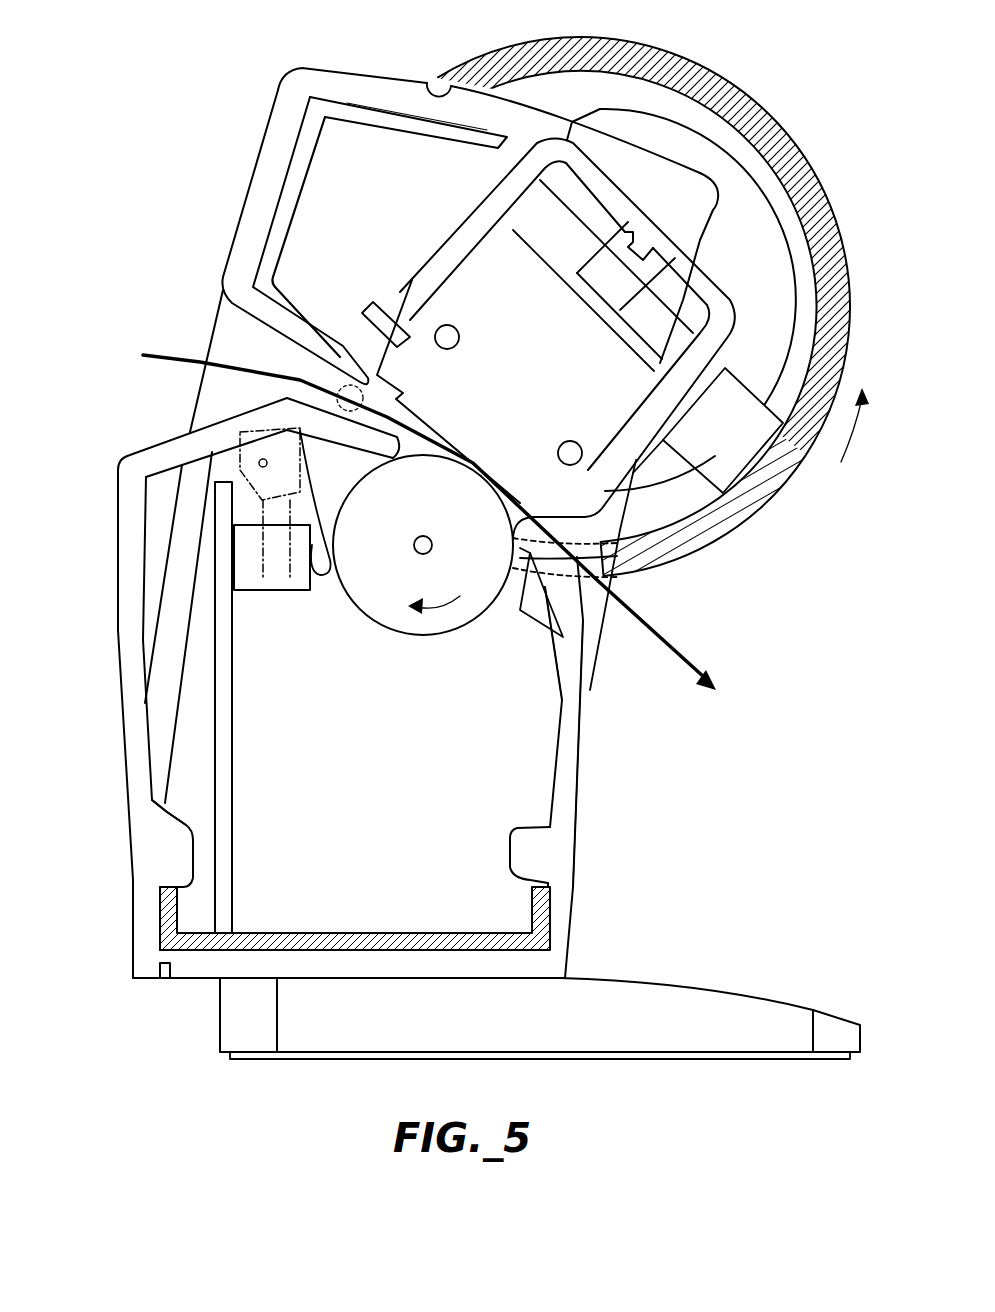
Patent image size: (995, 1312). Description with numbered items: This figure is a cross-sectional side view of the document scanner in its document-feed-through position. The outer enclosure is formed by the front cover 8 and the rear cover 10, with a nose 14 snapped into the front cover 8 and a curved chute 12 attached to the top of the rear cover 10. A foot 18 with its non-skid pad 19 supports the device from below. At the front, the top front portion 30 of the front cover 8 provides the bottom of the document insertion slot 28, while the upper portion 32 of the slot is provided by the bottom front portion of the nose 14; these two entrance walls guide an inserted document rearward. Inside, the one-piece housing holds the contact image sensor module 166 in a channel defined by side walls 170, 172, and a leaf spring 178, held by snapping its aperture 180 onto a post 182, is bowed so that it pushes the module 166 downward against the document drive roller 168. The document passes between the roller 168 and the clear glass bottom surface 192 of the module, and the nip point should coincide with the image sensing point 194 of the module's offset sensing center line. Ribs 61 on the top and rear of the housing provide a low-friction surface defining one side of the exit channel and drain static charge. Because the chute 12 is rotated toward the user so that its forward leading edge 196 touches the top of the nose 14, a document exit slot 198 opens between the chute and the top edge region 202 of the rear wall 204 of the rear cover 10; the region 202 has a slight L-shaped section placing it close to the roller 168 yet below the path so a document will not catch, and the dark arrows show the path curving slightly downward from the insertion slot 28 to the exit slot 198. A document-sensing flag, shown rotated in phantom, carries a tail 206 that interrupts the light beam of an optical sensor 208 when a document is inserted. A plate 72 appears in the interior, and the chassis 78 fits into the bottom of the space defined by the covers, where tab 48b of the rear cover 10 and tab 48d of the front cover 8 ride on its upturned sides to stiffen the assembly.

The front cover 8 is at (114, 843).
The rear cover 10 is at (598, 806).
The curved chute 12 is at (782, 108).
The nose 14 is at (208, 186).
The foot 18 is at (760, 992).
The pad 19 is at (767, 1057).
The document insertion slot 28 is at (220, 390).
The top front portion of front cover 30 is at (150, 443).
The upper portion of slot 32 is at (236, 318).
The tab 48b is at (537, 833).
The tab 48d is at (190, 827).
The rib 61 is at (830, 347).
The plate 72 is at (233, 740).
The chassis 78 is at (300, 933).
The contact image sensor module 166 is at (568, 377).
The document drive roller 168 is at (422, 502).
The side wall 170 is at (458, 282).
The side wall 172 is at (647, 404).
The leaf spring 178 is at (637, 273).
The aperture 180 is at (622, 232).
The post 182 is at (638, 244).
The glass bottom surface 192 is at (427, 413).
The image sensing point 194 is at (480, 467).
The forward leading edge 196 is at (444, 86).
The document exit slot 198 is at (597, 603).
The top edge region 202 is at (565, 640).
The rear wall 204 is at (583, 793).
The tail 206 is at (322, 597).
The optical sensor 208 is at (250, 577).